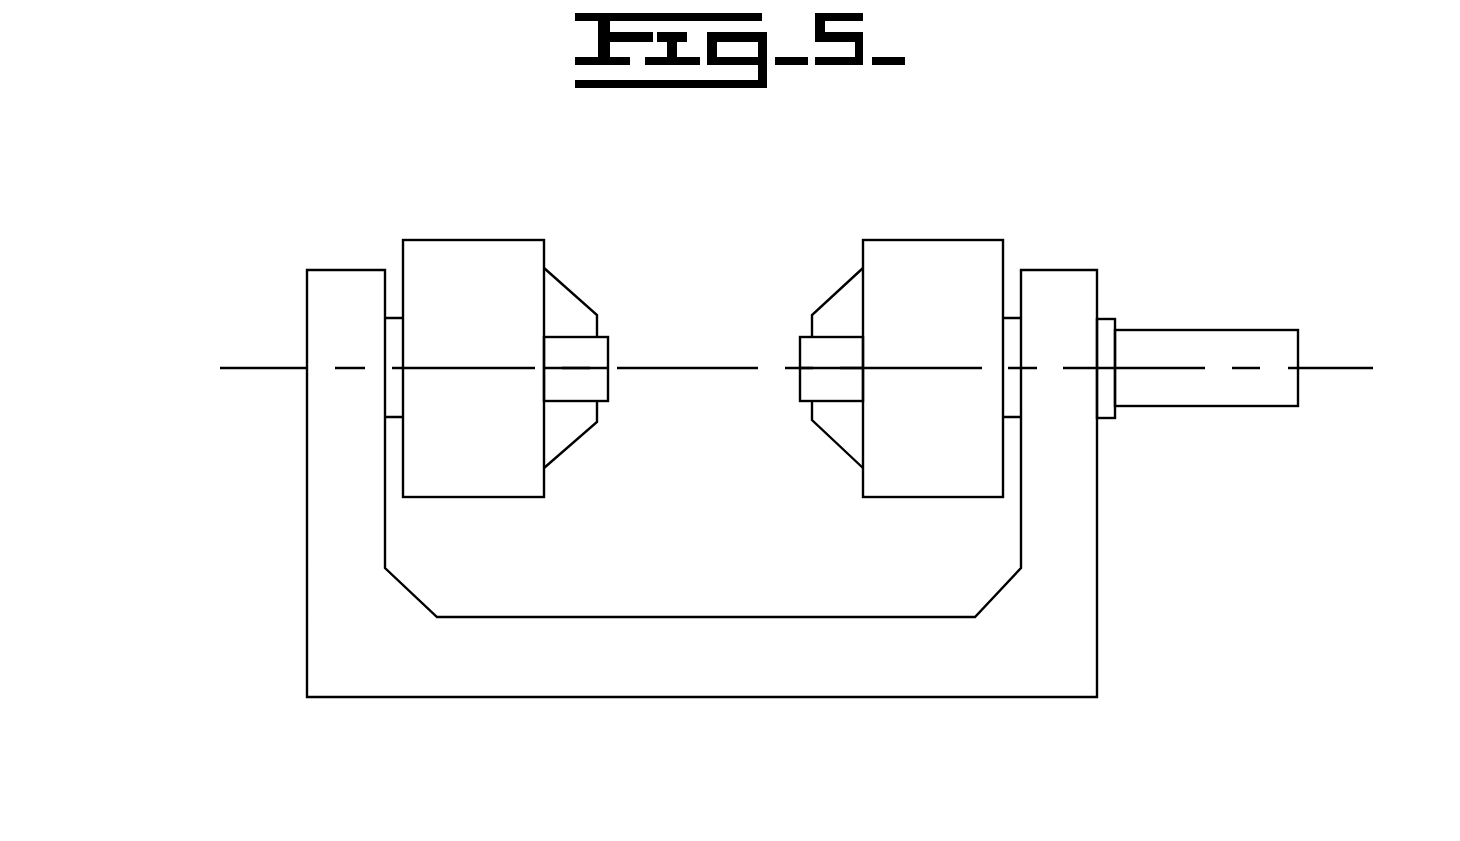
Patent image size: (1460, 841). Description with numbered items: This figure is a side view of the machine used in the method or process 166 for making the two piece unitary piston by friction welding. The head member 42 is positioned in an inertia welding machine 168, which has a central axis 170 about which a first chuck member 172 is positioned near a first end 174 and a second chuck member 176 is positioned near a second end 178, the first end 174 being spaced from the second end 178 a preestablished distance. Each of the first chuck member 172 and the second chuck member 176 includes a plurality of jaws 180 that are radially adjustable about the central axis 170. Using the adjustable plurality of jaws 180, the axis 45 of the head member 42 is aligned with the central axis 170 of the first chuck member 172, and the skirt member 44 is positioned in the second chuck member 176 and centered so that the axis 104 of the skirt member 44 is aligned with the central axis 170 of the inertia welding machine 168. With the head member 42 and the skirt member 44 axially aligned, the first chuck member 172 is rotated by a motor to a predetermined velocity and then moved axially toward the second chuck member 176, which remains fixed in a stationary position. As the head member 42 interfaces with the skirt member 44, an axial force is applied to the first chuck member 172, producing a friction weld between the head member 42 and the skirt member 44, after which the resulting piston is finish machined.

The method or process 166 is at (1222, 98).
The inertia welding machine 168 is at (485, 768).
The central axis 170 is at (1343, 368).
The first chuck member 172 is at (933, 240).
The first end 174 is at (1097, 283).
The second chuck member 176 is at (477, 240).
The second end 178 is at (307, 326).
The plurality of jaws 180 is at (565, 283).
The skirt member 44 is at (608, 383).
The head member 42 is at (800, 388).
The axis of the head member 45 is at (847, 368).
The axis of the skirt member 104 is at (577, 370).